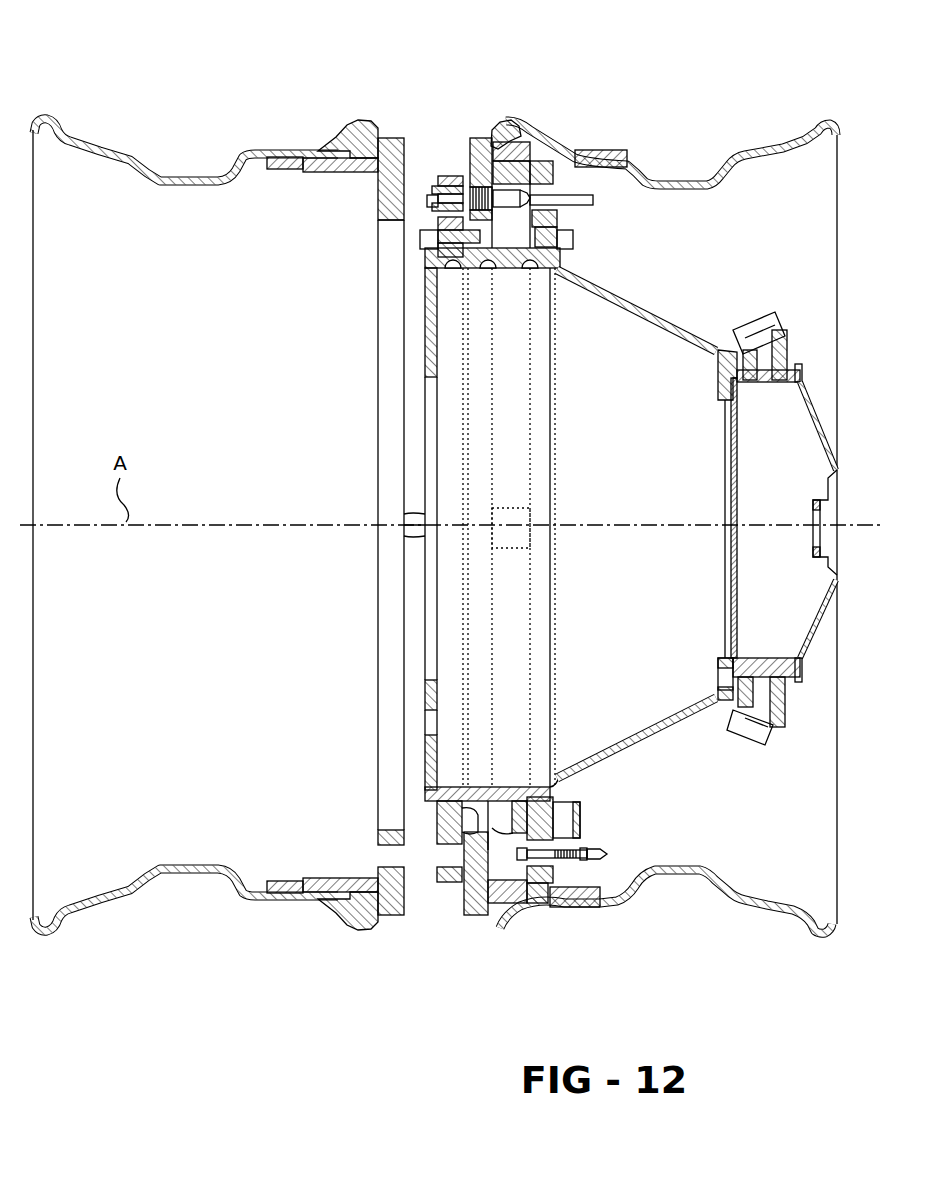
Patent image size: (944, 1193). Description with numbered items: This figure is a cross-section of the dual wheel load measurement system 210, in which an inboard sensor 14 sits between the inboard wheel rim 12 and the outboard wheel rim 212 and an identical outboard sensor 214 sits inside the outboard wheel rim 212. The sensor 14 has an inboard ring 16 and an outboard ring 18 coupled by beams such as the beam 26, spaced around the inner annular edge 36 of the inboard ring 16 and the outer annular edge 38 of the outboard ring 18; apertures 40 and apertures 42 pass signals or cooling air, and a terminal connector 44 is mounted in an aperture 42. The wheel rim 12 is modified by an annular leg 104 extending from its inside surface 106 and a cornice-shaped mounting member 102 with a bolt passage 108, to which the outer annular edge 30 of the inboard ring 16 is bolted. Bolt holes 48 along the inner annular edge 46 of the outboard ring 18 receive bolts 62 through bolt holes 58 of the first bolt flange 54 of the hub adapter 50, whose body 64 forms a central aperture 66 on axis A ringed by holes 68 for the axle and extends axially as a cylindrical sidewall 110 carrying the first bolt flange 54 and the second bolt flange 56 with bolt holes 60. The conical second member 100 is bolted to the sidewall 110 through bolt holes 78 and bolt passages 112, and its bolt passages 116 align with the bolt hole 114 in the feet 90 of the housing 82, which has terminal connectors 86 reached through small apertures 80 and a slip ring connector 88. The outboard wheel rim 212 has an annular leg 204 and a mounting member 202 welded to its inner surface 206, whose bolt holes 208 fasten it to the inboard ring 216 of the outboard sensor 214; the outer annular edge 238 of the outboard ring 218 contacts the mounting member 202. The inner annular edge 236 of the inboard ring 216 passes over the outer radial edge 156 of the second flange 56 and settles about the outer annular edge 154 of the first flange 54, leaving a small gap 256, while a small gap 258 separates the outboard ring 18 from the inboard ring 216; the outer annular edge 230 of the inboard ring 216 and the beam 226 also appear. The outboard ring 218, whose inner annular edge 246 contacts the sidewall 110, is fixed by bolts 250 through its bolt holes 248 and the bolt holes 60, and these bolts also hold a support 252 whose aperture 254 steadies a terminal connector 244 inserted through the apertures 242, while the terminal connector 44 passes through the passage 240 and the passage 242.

The wheel rim 12 is at (152, 170).
The sensor 14 is at (447, 97).
The inboard ring 16 is at (392, 138).
The outboard ring 18 is at (466, 180).
The beam 26 is at (404, 520).
The outer annular edge 30 is at (392, 916).
The inner annular edge 36 is at (378, 850).
The outer annular edge 38 is at (392, 888).
The apertures 40 is at (378, 838).
The apertures 42 is at (440, 185).
The terminal connector 44 is at (595, 200).
The inner annular edge 46 is at (404, 830).
The bolt holes 48 is at (445, 270).
The hub adapter 50 is at (700, 236).
The first bolt flange 54 is at (475, 801).
The second bolt flange 56 is at (515, 801).
The bolt holes 58 is at (497, 270).
The bolt holes 60 is at (548, 270).
The bolts 62 is at (420, 238).
The body 64 is at (440, 748).
The central aperture 66 is at (425, 597).
The holes 68 is at (437, 718).
The bolt holes 78 is at (592, 772).
The small apertures 80 is at (660, 322).
The housing 82 is at (817, 430).
The terminal connectors 86 is at (757, 318).
The connector 88 is at (820, 548).
The feet 90 is at (719, 696).
The second member 100 is at (670, 737).
The mounting member 102 is at (322, 173).
The annular leg 104 is at (300, 157).
The inside surface 106 is at (190, 186).
The bolt passage 108 is at (345, 133).
The cylindrical sidewall 110 is at (527, 270).
The bolt passages 112 is at (548, 787).
The bolt hole 114 is at (737, 660).
The bolt passages 116 is at (718, 675).
The outer annular edge 154 is at (447, 801).
The outer radial edge 156 is at (515, 801).
The mounting member 202 is at (522, 132).
The annular leg 204 is at (600, 158).
The inner surface 206 is at (773, 905).
The bolt holes 208 is at (502, 130).
The dual wheel load measurement system 210 is at (660, 975).
The outboard wheel rim 212 is at (722, 906).
The outboard sensor 214 is at (548, 160).
The inboard ring 216 is at (490, 132).
The outboard ring 218 is at (560, 185).
The beam 226 is at (531, 525).
The outer annular edge 230 is at (488, 903).
The inner annular edge 236 is at (478, 905).
The outer annular edge 238 is at (570, 907).
The passage 240 is at (545, 152).
The apertures 242 is at (575, 237).
The terminal connectors 244 is at (608, 855).
The inner annular edge 246 is at (558, 268).
The bolt holes 248 is at (553, 268).
The bolts 250 is at (572, 247).
The support 252 is at (583, 805).
The aperture 254 is at (585, 830).
The small gap 256 is at (378, 216).
The small gap 258 is at (455, 138).